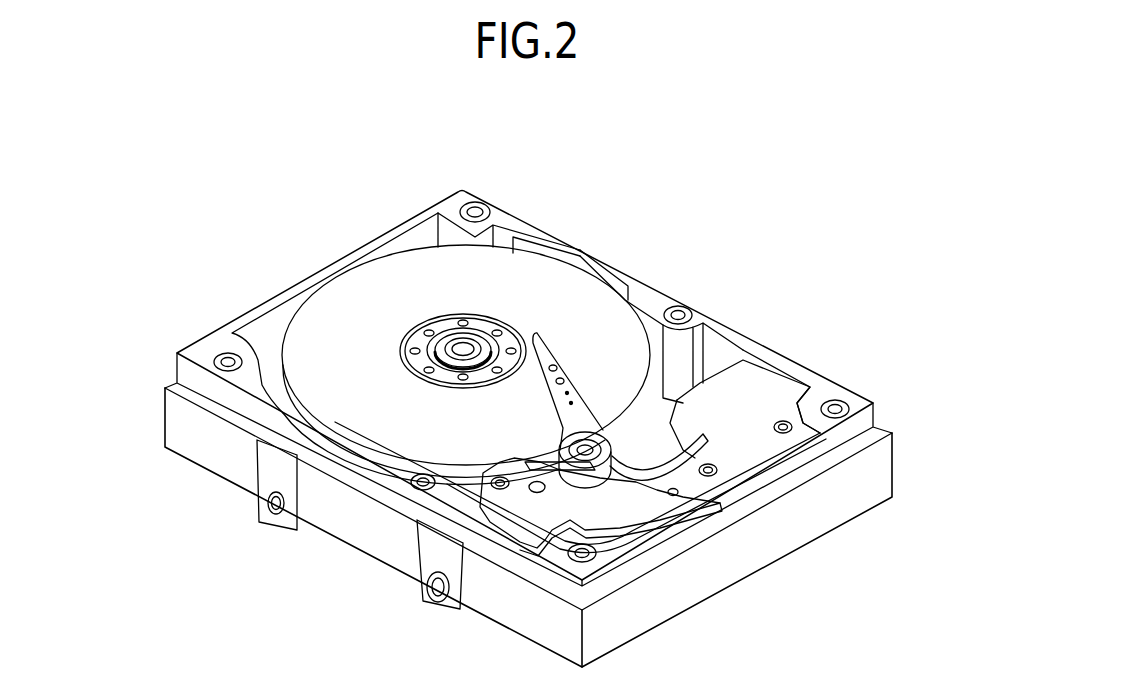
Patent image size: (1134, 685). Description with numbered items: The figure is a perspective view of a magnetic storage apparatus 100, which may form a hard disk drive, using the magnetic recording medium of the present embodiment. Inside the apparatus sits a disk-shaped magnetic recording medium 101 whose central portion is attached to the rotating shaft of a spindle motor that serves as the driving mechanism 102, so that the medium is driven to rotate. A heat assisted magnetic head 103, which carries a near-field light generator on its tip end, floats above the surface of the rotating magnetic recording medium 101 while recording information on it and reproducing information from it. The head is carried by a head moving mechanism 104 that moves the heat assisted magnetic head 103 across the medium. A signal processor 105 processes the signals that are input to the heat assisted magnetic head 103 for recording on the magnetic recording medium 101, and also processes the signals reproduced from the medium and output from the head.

The magnetic storage apparatus 100 is at (697, 300).
The magnetic recording medium 101 is at (505, 268).
The driving mechanism 102 is at (460, 345).
The heat assisted magnetic head 103 is at (537, 333).
The head moving mechanism 104 is at (620, 508).
The signal processor 105 is at (753, 400).